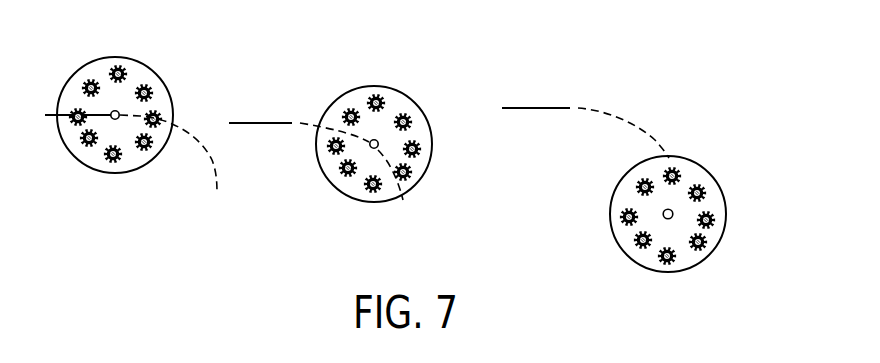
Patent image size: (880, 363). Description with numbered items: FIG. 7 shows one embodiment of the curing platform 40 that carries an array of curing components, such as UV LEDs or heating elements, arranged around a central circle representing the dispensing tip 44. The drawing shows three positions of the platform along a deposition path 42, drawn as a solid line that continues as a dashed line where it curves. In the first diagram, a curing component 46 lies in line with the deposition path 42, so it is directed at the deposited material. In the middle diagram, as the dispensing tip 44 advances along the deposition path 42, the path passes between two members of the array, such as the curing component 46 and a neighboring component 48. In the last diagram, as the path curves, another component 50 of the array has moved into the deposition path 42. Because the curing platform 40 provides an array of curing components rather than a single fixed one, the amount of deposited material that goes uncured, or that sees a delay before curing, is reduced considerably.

The curing platform 40 is at (133, 57).
The deposition path 42 is at (215, 171).
The dispensing tip 44 is at (116, 119).
The curing component 46 is at (75, 116).
The cutting tool 48 is at (348, 116).
The curing component 50 is at (674, 174).